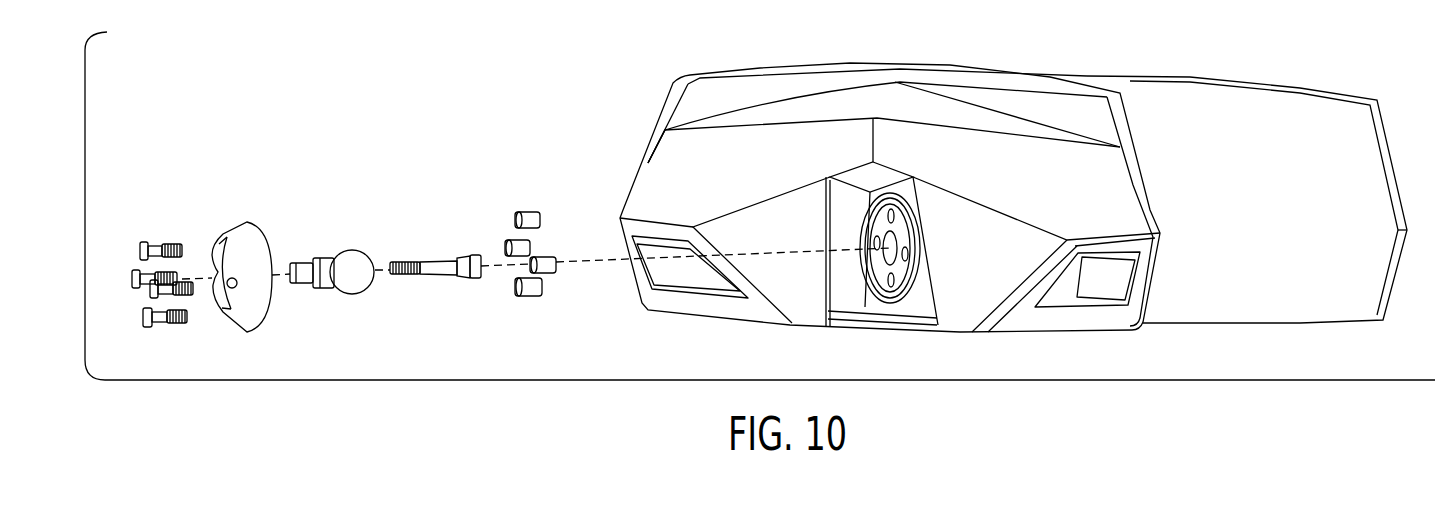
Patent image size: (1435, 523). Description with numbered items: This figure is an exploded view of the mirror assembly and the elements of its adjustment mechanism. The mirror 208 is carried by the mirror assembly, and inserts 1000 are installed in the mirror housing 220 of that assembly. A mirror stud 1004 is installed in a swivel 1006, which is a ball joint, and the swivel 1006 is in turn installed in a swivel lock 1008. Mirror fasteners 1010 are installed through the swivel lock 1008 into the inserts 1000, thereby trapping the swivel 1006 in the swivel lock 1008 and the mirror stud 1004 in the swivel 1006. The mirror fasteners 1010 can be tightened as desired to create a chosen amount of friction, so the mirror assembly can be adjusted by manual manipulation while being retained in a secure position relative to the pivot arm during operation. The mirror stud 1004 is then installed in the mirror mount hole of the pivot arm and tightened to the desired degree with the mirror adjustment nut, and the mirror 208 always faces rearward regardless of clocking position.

The inserts 1000 is at (530, 212).
The mirror stud 1004 is at (437, 261).
The swivel 1006 is at (340, 250).
The swivel lock 1008 is at (240, 220).
The mirror fasteners 1010 is at (163, 240).
The mirror housing 220 is at (1055, 184).
The mirror 208 is at (1297, 213).